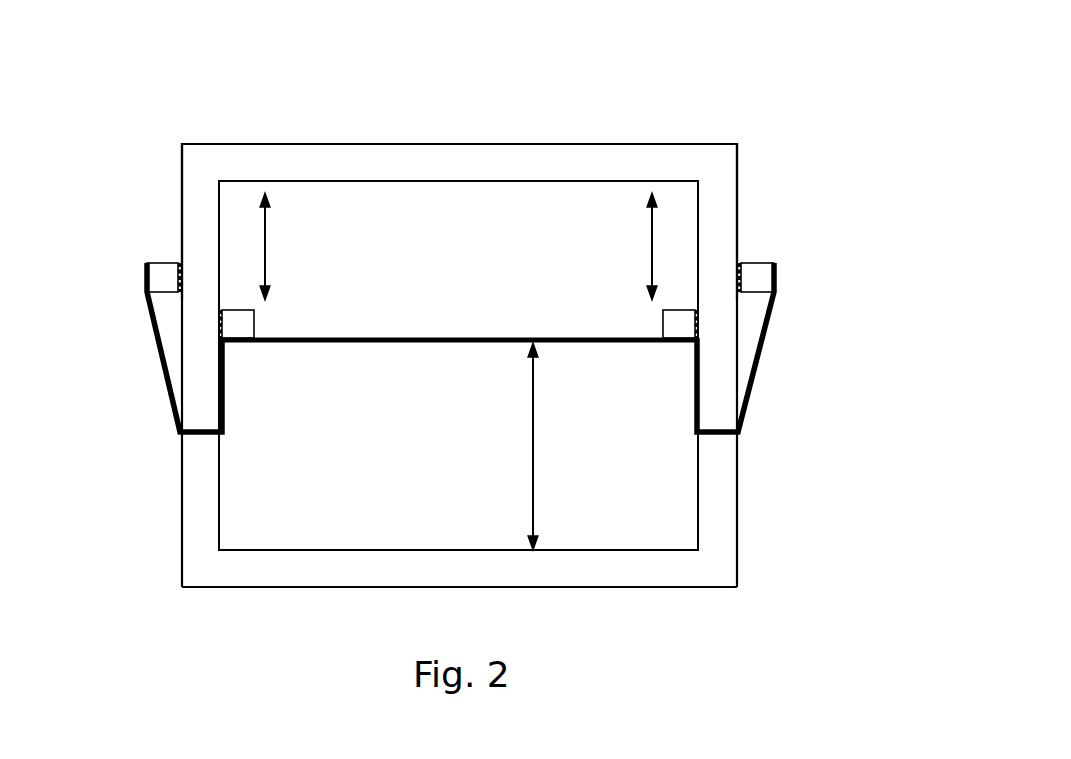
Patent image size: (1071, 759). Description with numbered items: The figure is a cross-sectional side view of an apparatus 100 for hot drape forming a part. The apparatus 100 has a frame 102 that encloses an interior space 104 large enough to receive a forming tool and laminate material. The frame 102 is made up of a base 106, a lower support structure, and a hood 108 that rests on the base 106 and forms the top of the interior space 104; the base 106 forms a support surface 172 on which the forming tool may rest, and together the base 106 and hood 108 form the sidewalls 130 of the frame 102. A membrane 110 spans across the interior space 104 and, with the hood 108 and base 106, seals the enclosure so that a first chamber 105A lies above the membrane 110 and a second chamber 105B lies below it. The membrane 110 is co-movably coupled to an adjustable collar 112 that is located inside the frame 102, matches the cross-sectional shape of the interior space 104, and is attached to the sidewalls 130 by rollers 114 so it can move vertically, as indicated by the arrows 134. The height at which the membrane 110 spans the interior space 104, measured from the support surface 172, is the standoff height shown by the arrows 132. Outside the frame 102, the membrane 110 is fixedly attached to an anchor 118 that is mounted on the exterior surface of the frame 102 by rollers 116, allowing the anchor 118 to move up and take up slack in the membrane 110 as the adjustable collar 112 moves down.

The apparatus 100 is at (762, 50).
The frame 102 is at (205, 137).
The interior space 104 is at (458, 365).
The first chamber 105A is at (455, 242).
The second chamber 105B is at (441, 449).
The base 106 is at (737, 535).
The hood 108 is at (546, 170).
The membrane 110 is at (152, 330).
The adjustable collar 112 is at (247, 320).
The rollers 114 is at (220, 307).
The rollers 116 is at (180, 265).
The anchor 118 is at (165, 280).
The sidewalls 130 is at (222, 200).
The arrows depicting standoff height 132 is at (533, 457).
The arrows 134 is at (265, 250).
The support surface 172 is at (622, 545).